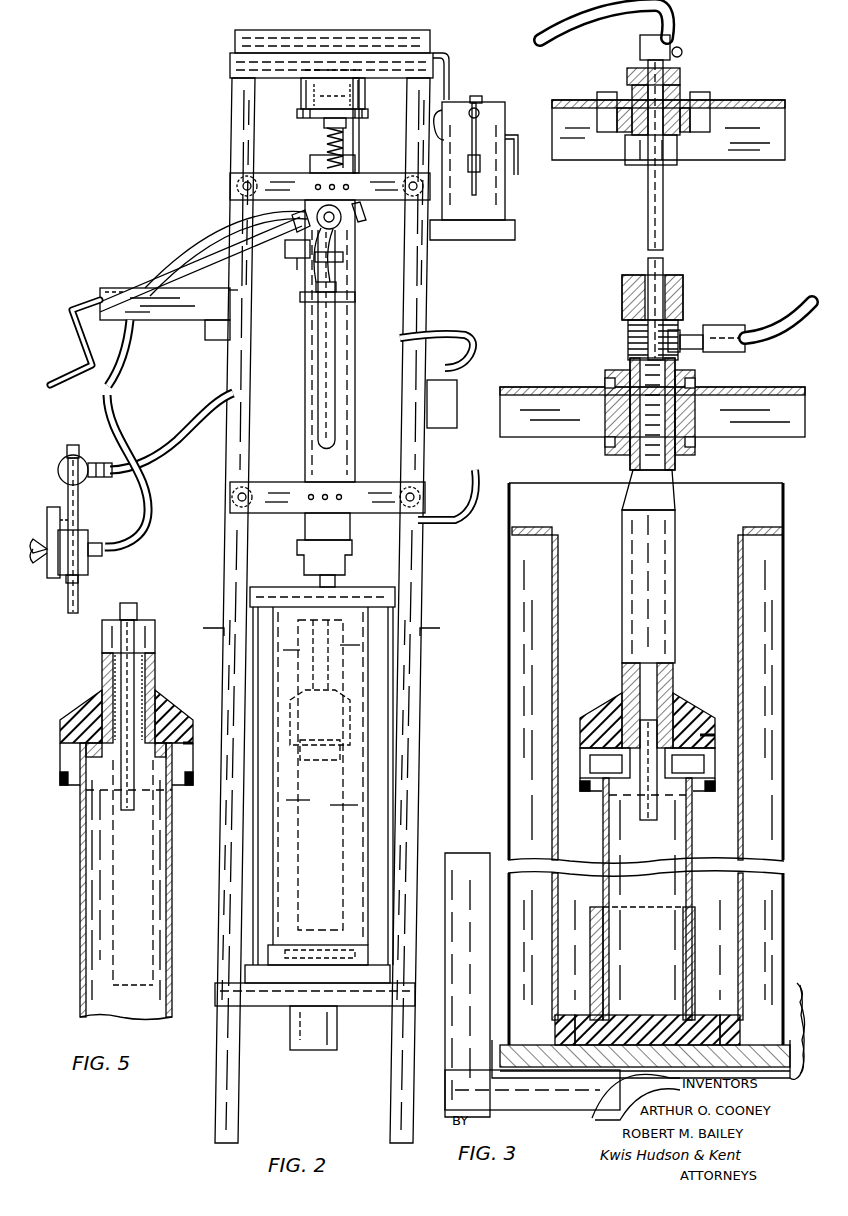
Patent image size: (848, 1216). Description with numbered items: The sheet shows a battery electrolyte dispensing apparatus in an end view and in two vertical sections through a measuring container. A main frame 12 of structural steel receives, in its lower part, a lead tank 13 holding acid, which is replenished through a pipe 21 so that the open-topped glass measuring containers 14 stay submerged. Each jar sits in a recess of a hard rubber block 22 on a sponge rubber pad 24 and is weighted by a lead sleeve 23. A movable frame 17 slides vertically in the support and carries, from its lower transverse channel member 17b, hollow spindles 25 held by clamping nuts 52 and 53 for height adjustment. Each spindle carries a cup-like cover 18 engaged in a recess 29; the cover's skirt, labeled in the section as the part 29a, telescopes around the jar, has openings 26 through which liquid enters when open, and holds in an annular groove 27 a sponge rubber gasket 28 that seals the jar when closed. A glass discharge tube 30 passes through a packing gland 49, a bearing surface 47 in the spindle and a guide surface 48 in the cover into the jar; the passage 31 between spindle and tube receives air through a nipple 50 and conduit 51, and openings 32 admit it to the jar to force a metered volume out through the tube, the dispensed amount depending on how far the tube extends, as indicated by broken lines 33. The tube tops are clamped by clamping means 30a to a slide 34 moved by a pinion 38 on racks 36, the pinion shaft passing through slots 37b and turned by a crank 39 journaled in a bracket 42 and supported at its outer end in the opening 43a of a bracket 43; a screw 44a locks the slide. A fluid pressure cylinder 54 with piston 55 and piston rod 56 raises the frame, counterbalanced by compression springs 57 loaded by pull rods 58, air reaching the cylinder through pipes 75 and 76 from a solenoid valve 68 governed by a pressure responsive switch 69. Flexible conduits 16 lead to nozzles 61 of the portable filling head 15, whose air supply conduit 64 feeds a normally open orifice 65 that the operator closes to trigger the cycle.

In FIG. 2, the frame 12 is at (416, 570).
In FIG. 2, the tank 13 is at (372, 690).
In FIG. 2, the measuring container 14 is at (370, 760).
In FIG. 5, the measuring container 14 is at (173, 820).
In FIG. 3, the measuring container 14 is at (694, 822).
In FIG. 2, the filling head 15 is at (92, 565).
In FIG. 2, the conduit 16 is at (152, 526).
In FIG. 3, the conduit 16 is at (548, 32).
In FIG. 2, the movable frame 17 is at (391, 198).
In FIG. 3, the transverse channel shaped member 17b is at (548, 386).
In FIG. 5, the cover 18 is at (180, 716).
In FIG. 3, the cover 18 is at (598, 712).
In FIG. 2, the pipe 21 is at (338, 1030).
In FIG. 3, the hard rubber block 22 is at (730, 1015).
In FIG. 3, the lead sleeve 23 is at (697, 970).
In FIG. 3, the resilient pad 24 is at (665, 1015).
In FIG. 2, the hollow spindle 25 is at (373, 657).
In FIG. 5, the hollow spindle 25 is at (156, 636).
In FIG. 3, the hollow spindle 25 is at (676, 552).
In FIG. 5, the opening 26 is at (193, 756).
In FIG. 3, the opening 26 is at (716, 754).
In FIG. 3, the annular groove 27 is at (605, 763).
In FIG. 3, the sealing gasket 28 is at (700, 712).
In FIG. 5, the recess 29 is at (162, 704).
In FIG. 5, the cone edge 29a is at (193, 745).
In FIG. 3, the cone edge 29a is at (716, 736).
In FIG. 2, the discharge tube 30 is at (337, 412).
In FIG. 5, the discharge tube 30 is at (138, 611).
In FIG. 3, the discharge tube 30 is at (665, 213).
In FIG. 3, the clamping means 30a is at (680, 150).
In FIG. 5, the passage 31 is at (156, 670).
In FIG. 5, the opening 32 is at (108, 745).
In FIG. 5, the broken lines 33 is at (130, 890).
In FIG. 3, the slide 34 is at (600, 161).
In FIG. 2, the rack 36 is at (356, 312).
In FIG. 2, the slot 37b is at (306, 312).
In FIG. 2, the pinion 38 is at (344, 226).
In FIG. 2, the crank 39 is at (80, 340).
In FIG. 2, the bracket 42 is at (218, 232).
In FIG. 2, the bracket 43 is at (168, 318).
In FIG. 2, the opening 43a is at (100, 300).
In FIG. 2, the screw 44a is at (289, 258).
In FIG. 3, the bearing surface 47 is at (682, 310).
In FIG. 3, the guide surface 48 is at (690, 763).
In FIG. 3, the packing gland 49 is at (680, 278).
In FIG. 3, the nipple 50 is at (706, 332).
In FIG. 2, the air supply conduit 51 is at (470, 492).
In FIG. 3, the air supply conduit 51 is at (774, 318).
In FIG. 3, the clamping nut 52 is at (695, 414).
In FIG. 3, the clamping nut 53 is at (680, 381).
In FIG. 2, the fluid pressure cylinder 54 is at (301, 88).
In FIG. 2, the piston 55 is at (300, 72).
In FIG. 2, the piston rod 56 is at (297, 114).
In FIG. 2, the compression spring 57 is at (326, 141).
In FIG. 2, the pull rod 58 is at (312, 159).
In FIG. 2, the nozzle 61 is at (76, 613).
In FIG. 2, the air pressure supply conduit 64 is at (186, 436).
In FIG. 2, the air discharge orifice 65 is at (73, 446).
In FIG. 2, the solenoid valve 68 is at (512, 200).
In FIG. 2, the pressure responsive switch 69 is at (448, 340).
In FIG. 2, the pipe 75 is at (392, 100).
In FIG. 2, the pipe 76 is at (452, 60).